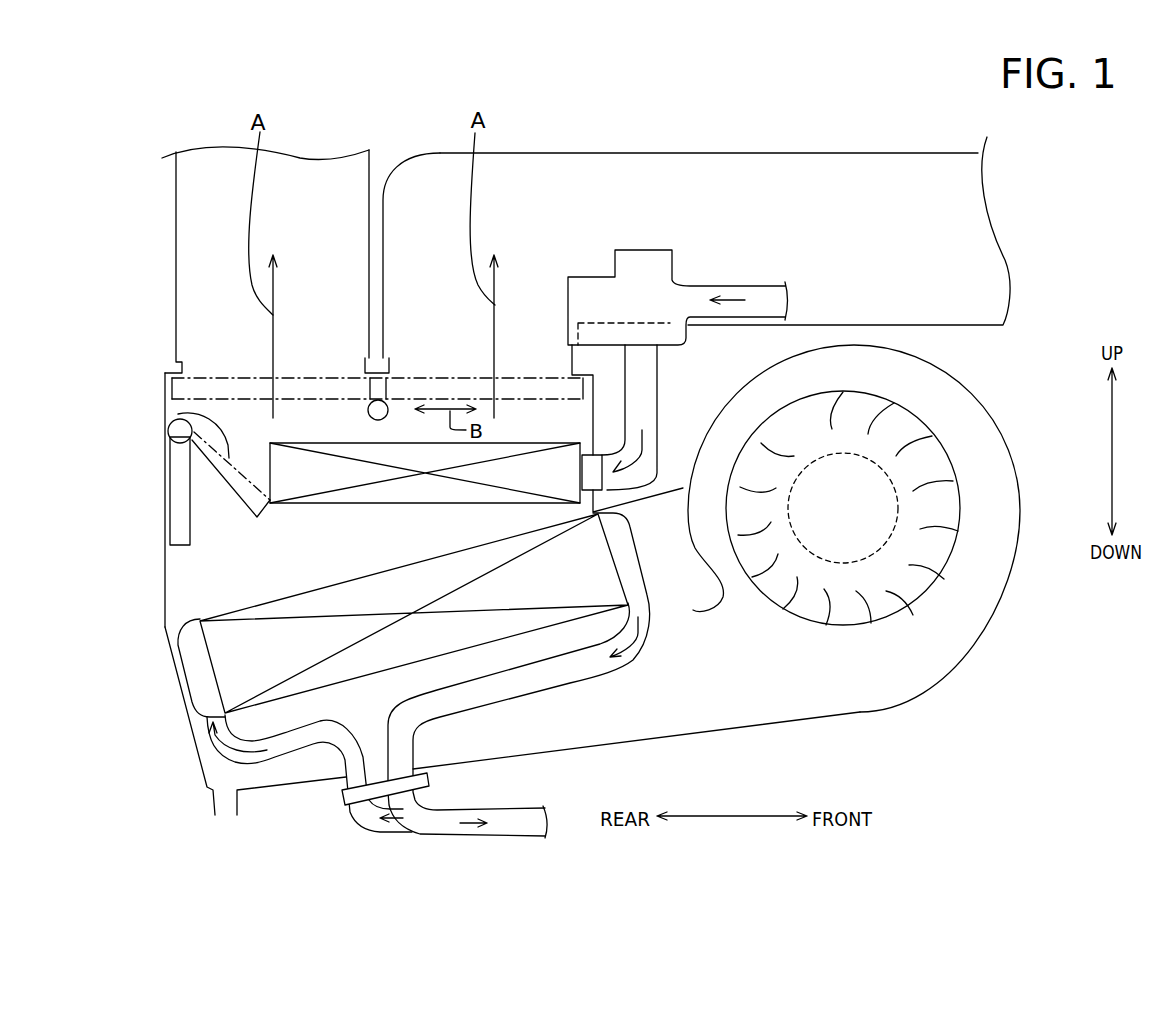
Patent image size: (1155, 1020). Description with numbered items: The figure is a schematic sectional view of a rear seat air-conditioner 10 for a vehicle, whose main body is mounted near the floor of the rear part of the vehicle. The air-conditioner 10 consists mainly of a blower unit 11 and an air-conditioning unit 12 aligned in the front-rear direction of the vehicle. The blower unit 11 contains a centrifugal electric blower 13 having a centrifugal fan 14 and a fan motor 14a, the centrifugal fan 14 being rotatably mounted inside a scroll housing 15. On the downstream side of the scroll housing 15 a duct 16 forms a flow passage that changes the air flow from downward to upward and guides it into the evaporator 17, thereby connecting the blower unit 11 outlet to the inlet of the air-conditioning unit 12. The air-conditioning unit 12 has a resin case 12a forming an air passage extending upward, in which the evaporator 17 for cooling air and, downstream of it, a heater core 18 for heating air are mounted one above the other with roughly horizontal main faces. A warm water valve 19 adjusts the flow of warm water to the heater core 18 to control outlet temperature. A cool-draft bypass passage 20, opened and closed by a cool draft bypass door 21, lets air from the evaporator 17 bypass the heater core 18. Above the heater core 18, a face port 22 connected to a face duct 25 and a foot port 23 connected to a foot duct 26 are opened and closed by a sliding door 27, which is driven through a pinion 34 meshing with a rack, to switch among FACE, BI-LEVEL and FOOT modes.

The rear seat air-conditioner 10 is at (577, 481).
The blower unit 11 is at (749, 569).
The air-conditioning unit 12 is at (145, 551).
The case 12a is at (163, 603).
The centrifugal electric blower 13 is at (913, 495).
The centrifugal fan 14 is at (897, 495).
The fan motor 14a is at (857, 455).
The scroll housing 15 is at (1022, 497).
The duct 16 is at (512, 725).
The evaporator 17 is at (257, 655).
The heater core 18 is at (510, 465).
The warm water valve 19 is at (642, 290).
The cool-draft bypass passage 20 is at (168, 420).
The cool draft bypass door 21 is at (178, 475).
The face port 22 is at (230, 363).
The foot port 23 is at (450, 300).
The face duct 25 is at (176, 200).
The foot duct 26 is at (762, 153).
The sliding door 27 is at (447, 363).
The pinion 34 is at (368, 408).